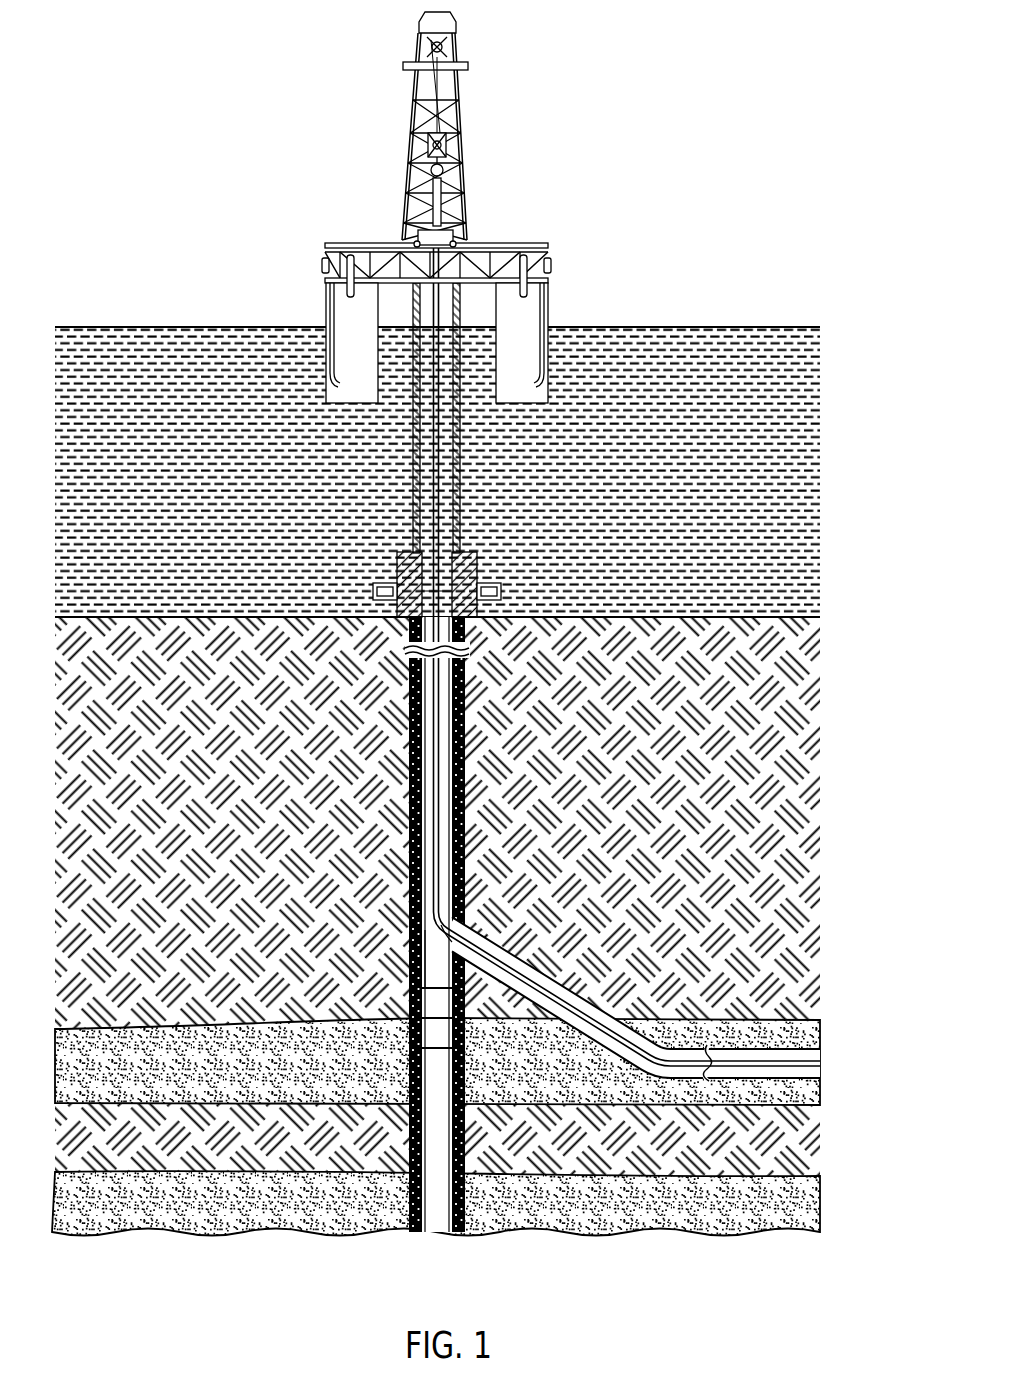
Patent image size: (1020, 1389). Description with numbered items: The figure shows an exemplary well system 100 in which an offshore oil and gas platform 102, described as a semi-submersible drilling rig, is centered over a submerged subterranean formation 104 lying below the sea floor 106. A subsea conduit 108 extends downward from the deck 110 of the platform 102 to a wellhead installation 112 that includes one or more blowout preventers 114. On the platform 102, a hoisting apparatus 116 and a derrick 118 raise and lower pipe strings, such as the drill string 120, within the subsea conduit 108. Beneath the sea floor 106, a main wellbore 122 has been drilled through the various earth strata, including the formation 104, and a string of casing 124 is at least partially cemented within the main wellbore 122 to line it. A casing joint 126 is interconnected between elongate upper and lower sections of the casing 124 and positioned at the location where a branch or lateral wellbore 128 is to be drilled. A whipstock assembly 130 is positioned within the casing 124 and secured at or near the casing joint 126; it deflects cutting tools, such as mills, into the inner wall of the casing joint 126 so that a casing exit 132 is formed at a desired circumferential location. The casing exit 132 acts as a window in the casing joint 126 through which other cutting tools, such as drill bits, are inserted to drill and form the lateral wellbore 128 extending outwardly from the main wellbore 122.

The well system 100 is at (504, 134).
The offshore oil and gas platform 102 is at (548, 245).
The subterranean formation 104 is at (197, 1075).
The sea floor 106 is at (687, 617).
The subsea conduit 108 is at (460, 440).
The deck 110 is at (548, 288).
The wellhead installation 112 is at (477, 565).
The blowout preventer 114 is at (500, 588).
The hoisting apparatus 116 is at (432, 234).
The derrick 118 is at (455, 34).
The drill string 120 is at (438, 483).
The main wellbore 122 is at (463, 738).
The casing 124 is at (462, 800).
The casing joint 126 is at (410, 930).
The lateral wellbore 128 is at (605, 1012).
The whipstock assembly 130 is at (423, 973).
The casing exit 132 is at (446, 940).